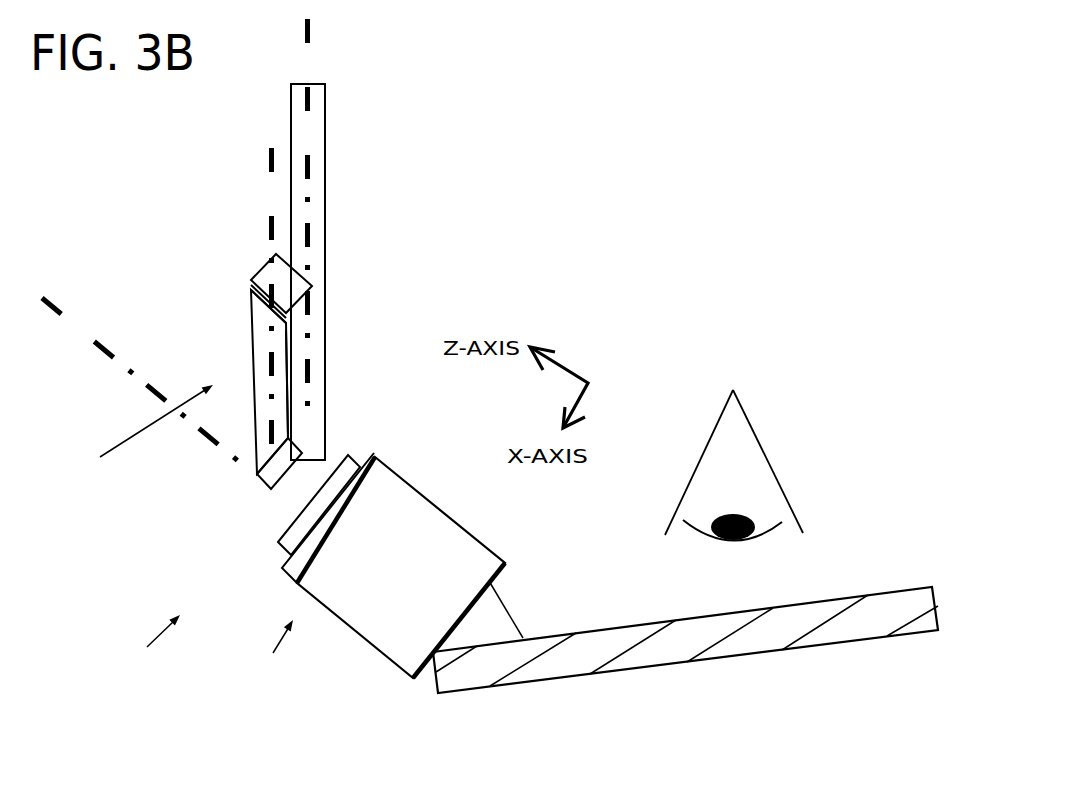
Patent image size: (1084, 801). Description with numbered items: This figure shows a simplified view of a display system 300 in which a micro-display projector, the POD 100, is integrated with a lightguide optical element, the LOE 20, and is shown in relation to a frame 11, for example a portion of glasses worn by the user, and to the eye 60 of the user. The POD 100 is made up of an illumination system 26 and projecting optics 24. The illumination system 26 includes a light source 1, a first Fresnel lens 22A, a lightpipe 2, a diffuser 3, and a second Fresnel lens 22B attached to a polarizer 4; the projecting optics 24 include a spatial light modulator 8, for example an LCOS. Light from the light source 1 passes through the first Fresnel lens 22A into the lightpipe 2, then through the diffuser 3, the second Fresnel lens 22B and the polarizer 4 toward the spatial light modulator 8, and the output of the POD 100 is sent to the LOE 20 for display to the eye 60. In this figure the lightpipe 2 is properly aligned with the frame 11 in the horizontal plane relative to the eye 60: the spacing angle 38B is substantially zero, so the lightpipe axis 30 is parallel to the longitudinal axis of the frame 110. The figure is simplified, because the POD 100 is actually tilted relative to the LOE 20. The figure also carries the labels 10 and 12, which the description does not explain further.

The display system 300 is at (133, 116).
The longitudinal axis of the frame 110 is at (310, 213).
The frame 11 is at (308, 272).
The lightpipe axis 30 is at (268, 296).
The optical axis of incoming light 10 is at (140, 380).
The light source 1 is at (266, 262).
The first Fresnel lens 22A is at (255, 284).
The lightpipe 2 is at (254, 374).
The spacing angle 38B is at (288, 374).
The diffuser 3 is at (279, 463).
The illumination system 26 is at (134, 427).
The second Fresnel lens 22B is at (319, 505).
The polarizer 4 is at (328, 518).
The spatial light modulator 8 is at (401, 567).
The coupling wedge 12 is at (501, 609).
The lightguide optical element 20 is at (685, 640).
The eye 60 is at (734, 465).
The micro-display projector (POD) 100 is at (138, 637).
The projecting optics 24 is at (265, 643).